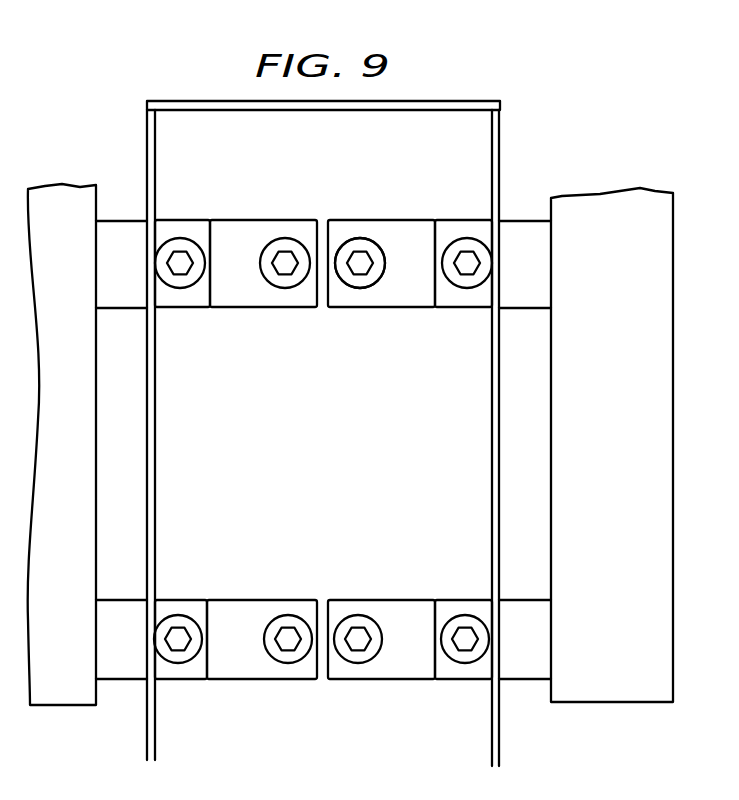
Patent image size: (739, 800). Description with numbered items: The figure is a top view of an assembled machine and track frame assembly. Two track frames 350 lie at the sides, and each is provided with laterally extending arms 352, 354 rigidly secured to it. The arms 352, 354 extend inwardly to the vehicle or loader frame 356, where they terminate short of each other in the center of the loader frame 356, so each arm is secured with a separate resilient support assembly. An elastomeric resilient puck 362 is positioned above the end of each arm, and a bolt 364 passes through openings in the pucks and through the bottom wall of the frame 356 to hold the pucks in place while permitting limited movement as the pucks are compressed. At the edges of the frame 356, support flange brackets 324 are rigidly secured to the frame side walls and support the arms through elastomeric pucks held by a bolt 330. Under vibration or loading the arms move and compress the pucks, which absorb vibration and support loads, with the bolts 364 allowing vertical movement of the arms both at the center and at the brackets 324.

The support flange bracket 324 is at (197, 230).
The bolt 330 is at (182, 273).
The track frame 350 is at (65, 675).
The laterally extending arm 352 is at (238, 663).
The laterally extending arm 354 is at (402, 237).
The loader frame 356 is at (452, 100).
The elastomeric resilient puck 362 is at (373, 277).
The bolt 364 is at (285, 258).